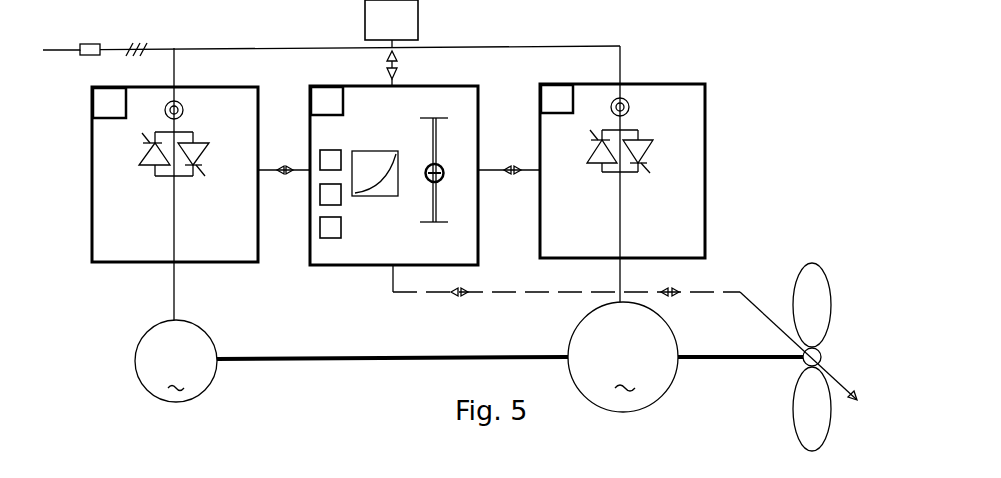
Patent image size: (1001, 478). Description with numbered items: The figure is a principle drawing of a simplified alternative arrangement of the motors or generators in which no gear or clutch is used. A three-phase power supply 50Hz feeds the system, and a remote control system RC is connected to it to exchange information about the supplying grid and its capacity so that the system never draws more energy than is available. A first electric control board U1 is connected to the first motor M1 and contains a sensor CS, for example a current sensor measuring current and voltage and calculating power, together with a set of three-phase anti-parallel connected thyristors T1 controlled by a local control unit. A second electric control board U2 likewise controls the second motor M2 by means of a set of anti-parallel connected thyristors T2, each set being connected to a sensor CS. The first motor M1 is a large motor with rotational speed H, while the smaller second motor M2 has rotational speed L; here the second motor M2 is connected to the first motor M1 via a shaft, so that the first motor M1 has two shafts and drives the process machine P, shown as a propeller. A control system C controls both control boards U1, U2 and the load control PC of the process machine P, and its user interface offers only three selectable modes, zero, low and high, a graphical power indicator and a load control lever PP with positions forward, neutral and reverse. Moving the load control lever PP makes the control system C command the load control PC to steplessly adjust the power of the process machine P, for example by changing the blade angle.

The power supply frequency 50Hz is at (327, 45).
The remote control system RC is at (391, 43).
The second electric control board U2 is at (175, 184).
The set of 3-phase anti-parallel connected thyristors T2 is at (174, 154).
The sensor CS is at (183, 110).
The control system C is at (499, 191).
The load control lever PP is at (437, 173).
The first electric control board U1 is at (622, 174).
The set of 3-phase anti-parallel connected thyristors T1 is at (620, 151).
The second motor M2 is at (351, 361).
The first motor M1 is at (623, 357).
The process machine P is at (765, 357).
The load control PC is at (763, 305).